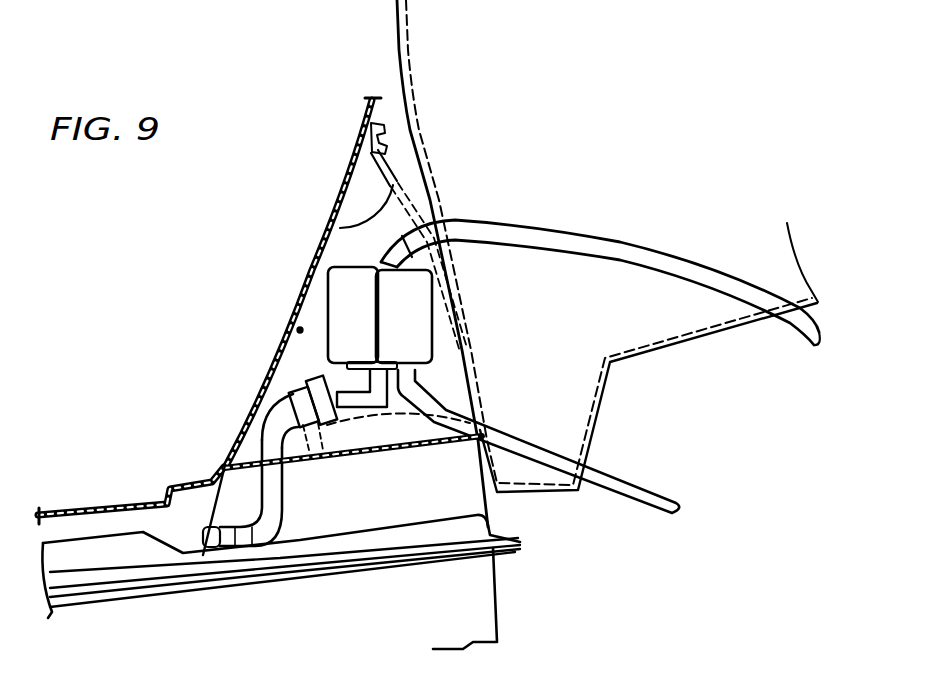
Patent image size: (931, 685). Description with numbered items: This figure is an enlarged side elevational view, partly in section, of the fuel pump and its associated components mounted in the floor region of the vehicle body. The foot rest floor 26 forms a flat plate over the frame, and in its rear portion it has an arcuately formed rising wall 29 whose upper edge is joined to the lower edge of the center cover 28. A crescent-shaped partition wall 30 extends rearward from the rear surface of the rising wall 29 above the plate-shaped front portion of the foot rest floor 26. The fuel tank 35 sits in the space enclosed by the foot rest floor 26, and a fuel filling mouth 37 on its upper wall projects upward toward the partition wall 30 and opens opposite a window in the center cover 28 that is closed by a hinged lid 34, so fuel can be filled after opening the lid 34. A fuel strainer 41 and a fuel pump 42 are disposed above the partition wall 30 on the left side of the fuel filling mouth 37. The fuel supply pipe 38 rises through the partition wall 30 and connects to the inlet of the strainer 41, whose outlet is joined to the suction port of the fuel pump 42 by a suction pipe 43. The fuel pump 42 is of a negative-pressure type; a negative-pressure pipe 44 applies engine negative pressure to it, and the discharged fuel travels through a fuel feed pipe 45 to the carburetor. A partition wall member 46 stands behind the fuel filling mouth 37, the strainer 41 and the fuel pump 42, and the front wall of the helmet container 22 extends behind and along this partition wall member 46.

The helmet container 22 is at (397, 60).
The foot rest floor 26 is at (90, 513).
The center cover 28 is at (367, 113).
The rising wall 29 is at (257, 410).
The partition wall 30 is at (392, 452).
The lid 34 is at (348, 190).
The fuel tank 35 is at (460, 602).
The fuel filling mouth 37 is at (455, 418).
The fuel supply pipe 38 is at (232, 420).
The fuel strainer 41 is at (290, 386).
The fuel pump 42 is at (422, 315).
The suction pipe 43 is at (340, 380).
The negative-pressure pipe 44 is at (420, 397).
The fuel feed pipe 45 is at (452, 220).
The partition wall member 46 is at (447, 262).